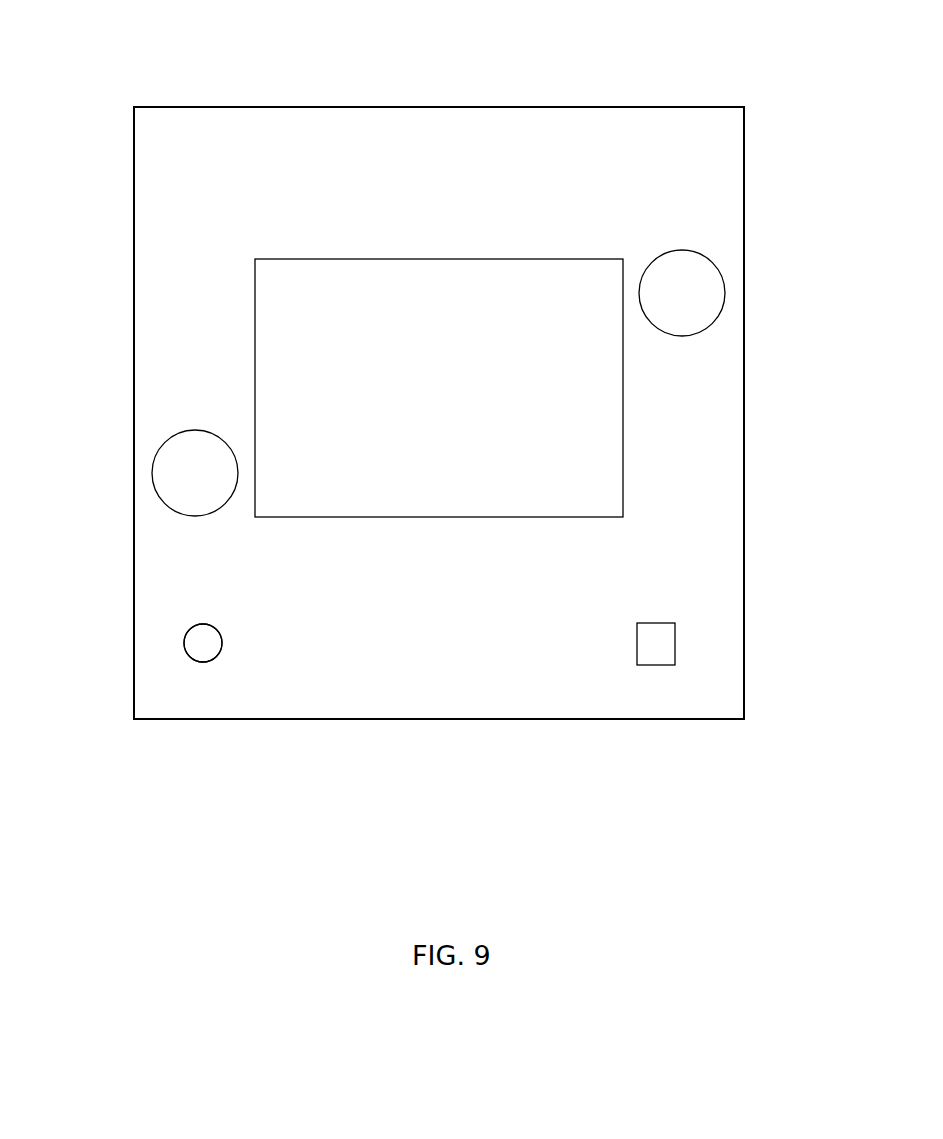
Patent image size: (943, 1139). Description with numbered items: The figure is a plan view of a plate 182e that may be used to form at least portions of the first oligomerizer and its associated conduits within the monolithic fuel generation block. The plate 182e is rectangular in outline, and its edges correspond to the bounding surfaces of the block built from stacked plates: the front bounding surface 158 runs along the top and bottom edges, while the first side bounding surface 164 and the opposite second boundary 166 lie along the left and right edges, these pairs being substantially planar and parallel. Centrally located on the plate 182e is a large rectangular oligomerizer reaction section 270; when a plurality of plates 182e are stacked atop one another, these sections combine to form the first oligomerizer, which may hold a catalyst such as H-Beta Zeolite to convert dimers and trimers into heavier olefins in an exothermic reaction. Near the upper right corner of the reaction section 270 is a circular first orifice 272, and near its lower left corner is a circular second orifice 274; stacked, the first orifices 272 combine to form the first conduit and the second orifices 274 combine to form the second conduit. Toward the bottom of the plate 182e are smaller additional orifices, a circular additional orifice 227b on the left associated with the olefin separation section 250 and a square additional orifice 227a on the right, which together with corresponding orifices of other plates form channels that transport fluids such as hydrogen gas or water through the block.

The front bounding surface 158 is at (383, 107).
The plate 182e is at (134, 200).
The first side bounding surface 164 is at (134, 380).
The second boundary 166 is at (744, 343).
The oligomerizer reaction section 270 is at (453, 382).
The first orifice 272 is at (708, 307).
The second orifice 274 is at (217, 487).
The olefin separation section 250 is at (208, 613).
The additional orifice 227b is at (208, 653).
The additional orifice 227a is at (638, 642).